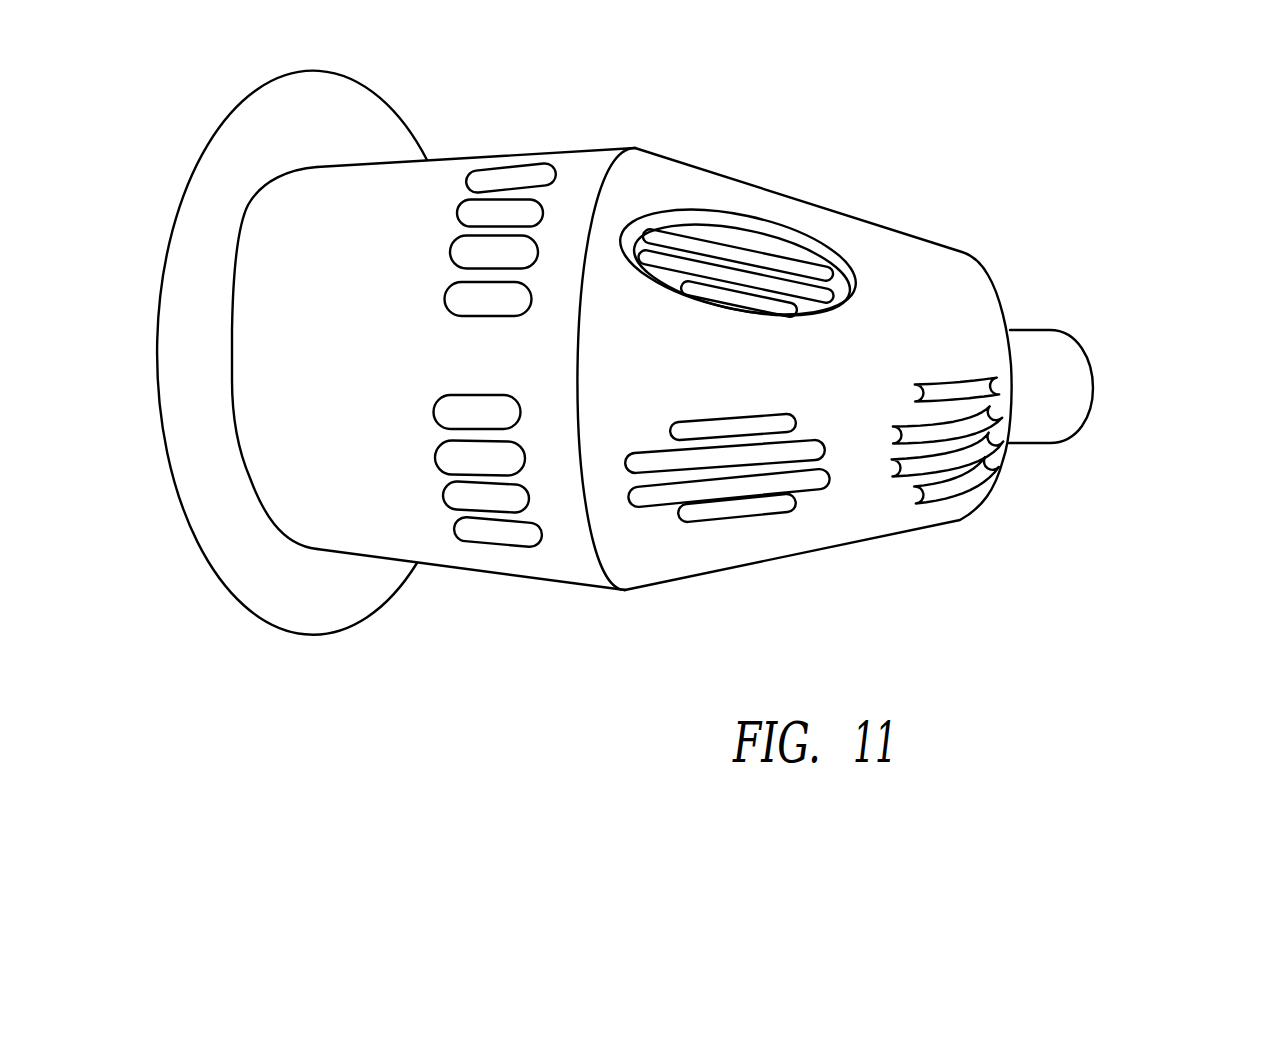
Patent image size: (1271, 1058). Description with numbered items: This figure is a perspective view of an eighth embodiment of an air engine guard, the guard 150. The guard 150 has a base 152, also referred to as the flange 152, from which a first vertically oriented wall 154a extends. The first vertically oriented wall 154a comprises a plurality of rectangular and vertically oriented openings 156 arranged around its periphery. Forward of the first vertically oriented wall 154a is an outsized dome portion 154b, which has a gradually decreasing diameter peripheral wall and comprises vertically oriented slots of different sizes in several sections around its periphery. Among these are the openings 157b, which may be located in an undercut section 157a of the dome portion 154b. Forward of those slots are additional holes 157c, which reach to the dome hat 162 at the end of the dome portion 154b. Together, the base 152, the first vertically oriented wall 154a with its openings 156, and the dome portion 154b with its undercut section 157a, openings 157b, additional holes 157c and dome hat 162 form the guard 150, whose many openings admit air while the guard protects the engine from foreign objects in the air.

The guard 150 is at (708, 388).
The base 152 is at (313, 605).
The first vertically oriented wall 154a is at (405, 527).
The outsized dome portion 154b is at (625, 545).
The rectangular and vertically oriented openings 156 is at (538, 175).
The undercut section 157a is at (650, 214).
The openings 157b is at (748, 507).
The additional holes 157c is at (945, 490).
The dome hat 162 is at (1058, 388).